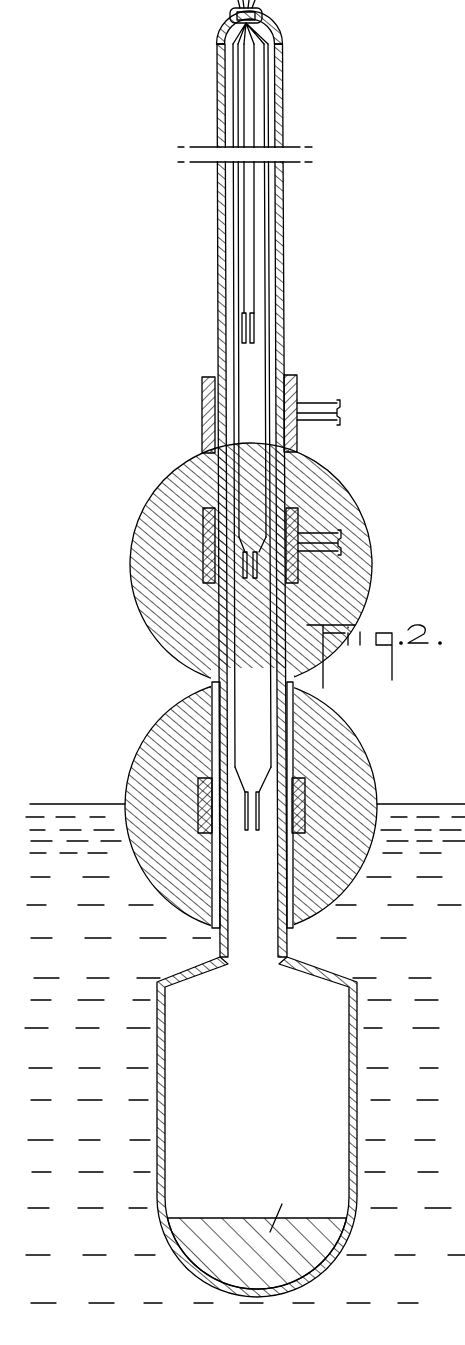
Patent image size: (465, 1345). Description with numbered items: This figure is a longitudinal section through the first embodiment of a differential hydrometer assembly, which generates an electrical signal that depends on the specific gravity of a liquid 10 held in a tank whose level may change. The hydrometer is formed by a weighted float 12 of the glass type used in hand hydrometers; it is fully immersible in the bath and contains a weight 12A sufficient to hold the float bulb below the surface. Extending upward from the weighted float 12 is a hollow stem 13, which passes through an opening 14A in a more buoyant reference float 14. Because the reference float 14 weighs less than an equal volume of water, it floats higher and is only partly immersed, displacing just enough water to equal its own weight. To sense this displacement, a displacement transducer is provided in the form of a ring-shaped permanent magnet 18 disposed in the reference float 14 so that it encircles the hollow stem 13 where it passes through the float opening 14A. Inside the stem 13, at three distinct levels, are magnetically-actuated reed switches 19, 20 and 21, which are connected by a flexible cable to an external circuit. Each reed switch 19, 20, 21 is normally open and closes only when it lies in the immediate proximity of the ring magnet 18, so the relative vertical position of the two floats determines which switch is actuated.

The liquid 10 is at (426, 808).
The weighted float 12 is at (350, 1022).
The weight 12A is at (198, 1245).
The stem 13 is at (281, 308).
The reference float 14 is at (178, 708).
The opening 14A is at (220, 682).
The ring-shaped permanent magnet 18 is at (305, 789).
The reed switch 19 is at (257, 822).
The reed switch 20 is at (245, 580).
The reed switch 21 is at (242, 346).